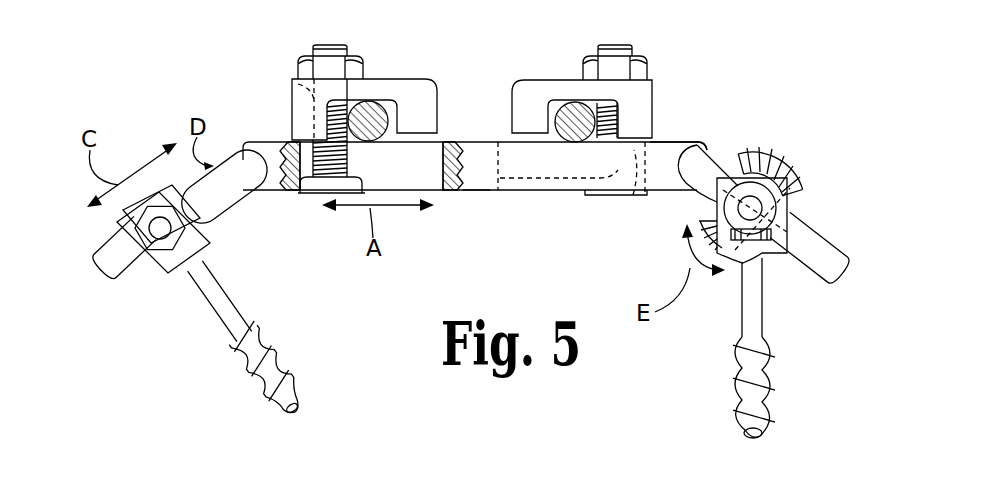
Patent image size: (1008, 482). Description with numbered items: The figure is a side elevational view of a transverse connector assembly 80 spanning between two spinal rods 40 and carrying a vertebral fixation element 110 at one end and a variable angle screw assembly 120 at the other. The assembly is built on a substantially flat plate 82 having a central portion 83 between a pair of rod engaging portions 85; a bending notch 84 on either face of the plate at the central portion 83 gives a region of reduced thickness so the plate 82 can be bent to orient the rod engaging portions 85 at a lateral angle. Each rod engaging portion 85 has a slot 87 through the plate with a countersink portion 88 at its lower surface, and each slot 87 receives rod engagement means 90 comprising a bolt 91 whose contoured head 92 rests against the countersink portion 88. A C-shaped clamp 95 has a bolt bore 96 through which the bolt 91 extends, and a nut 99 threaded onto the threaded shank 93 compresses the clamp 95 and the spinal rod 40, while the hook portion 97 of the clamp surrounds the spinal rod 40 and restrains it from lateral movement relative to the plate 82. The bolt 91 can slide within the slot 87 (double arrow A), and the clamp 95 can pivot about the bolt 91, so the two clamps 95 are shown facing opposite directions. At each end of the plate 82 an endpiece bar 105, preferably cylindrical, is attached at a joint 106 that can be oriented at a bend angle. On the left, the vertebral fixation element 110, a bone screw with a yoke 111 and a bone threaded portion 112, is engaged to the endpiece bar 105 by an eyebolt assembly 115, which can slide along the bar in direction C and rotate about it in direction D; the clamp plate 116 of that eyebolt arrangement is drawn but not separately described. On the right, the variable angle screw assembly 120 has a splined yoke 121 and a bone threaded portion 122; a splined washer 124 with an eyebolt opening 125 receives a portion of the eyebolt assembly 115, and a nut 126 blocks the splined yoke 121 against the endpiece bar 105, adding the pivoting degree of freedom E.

The transverse connector assembly 80 is at (752, 74).
The plate 82 is at (520, 196).
The central portion 83 is at (463, 191).
The bending notch 84 is at (473, 141).
The rod engaging portion 85 is at (666, 136).
The slot 87 is at (443, 141).
The countersink portion 88 is at (445, 191).
The rod engagement means 90 is at (380, 70).
The bolt 91 is at (288, 192).
The contoured head 92 is at (308, 194).
The threaded shank 93 is at (316, 50).
The clamp 95 is at (522, 80).
The bolt bore 96 is at (296, 64).
The hook portion 97 is at (375, 141).
The nut 99 is at (352, 63).
The spinal rod 40 is at (562, 104).
The endpiece bar 105 is at (112, 242).
The joint 106 is at (700, 148).
The vertebral fixation element 110 is at (204, 338).
The yoke 111 is at (160, 275).
The bone threaded portion 112 is at (257, 388).
The eyebolt assembly 115 is at (122, 278).
The clamp plate 116 is at (205, 240).
The variable angle screw assembly 120 is at (776, 274).
The splined yoke 121 is at (773, 207).
The bone threaded portion 122 is at (768, 370).
The splined washer 124 is at (768, 160).
The eyebolt opening 125 is at (780, 178).
The nut 126 is at (740, 265).